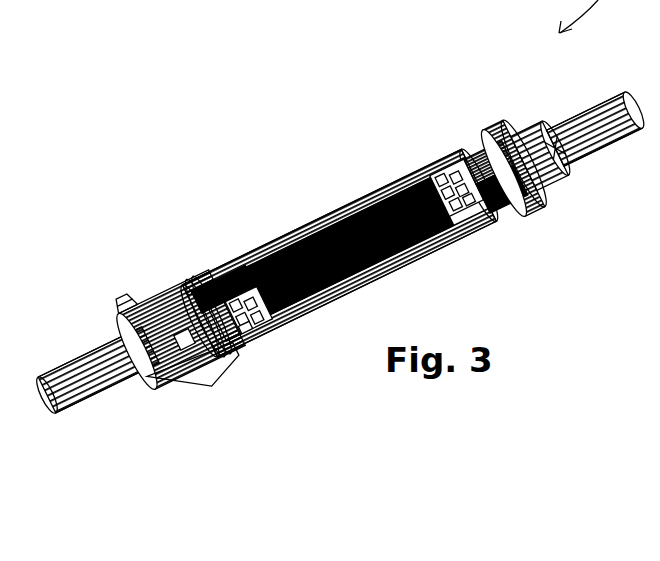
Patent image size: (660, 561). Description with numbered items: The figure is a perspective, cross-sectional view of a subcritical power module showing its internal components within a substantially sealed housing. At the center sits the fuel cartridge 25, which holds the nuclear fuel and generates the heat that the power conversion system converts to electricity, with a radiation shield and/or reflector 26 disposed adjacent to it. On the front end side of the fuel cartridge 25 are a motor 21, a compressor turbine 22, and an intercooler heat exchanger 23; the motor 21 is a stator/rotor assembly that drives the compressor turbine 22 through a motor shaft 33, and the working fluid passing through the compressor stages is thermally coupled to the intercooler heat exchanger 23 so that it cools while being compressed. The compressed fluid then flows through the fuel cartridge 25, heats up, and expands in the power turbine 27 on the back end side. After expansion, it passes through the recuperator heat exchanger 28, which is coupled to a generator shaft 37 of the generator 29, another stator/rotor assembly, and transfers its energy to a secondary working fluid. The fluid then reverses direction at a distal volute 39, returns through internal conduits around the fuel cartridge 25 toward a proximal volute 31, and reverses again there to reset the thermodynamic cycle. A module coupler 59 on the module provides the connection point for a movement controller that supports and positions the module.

The motor 21 is at (102, 390).
The compressor turbine 22 is at (247, 330).
The intercooler heat exchanger 23 is at (208, 300).
The fuel cartridge 25 is at (308, 268).
The radiation shield and/or reflector 26 is at (367, 197).
The power turbine 27 is at (445, 175).
The recuperator heat exchanger 28 is at (492, 167).
The generator 29 is at (595, 130).
The proximal volute 31 is at (145, 375).
The motor shaft 33 is at (205, 383).
The generator shaft 37 is at (498, 177).
The distal volute 39 is at (558, 168).
The module coupler 59 is at (187, 282).